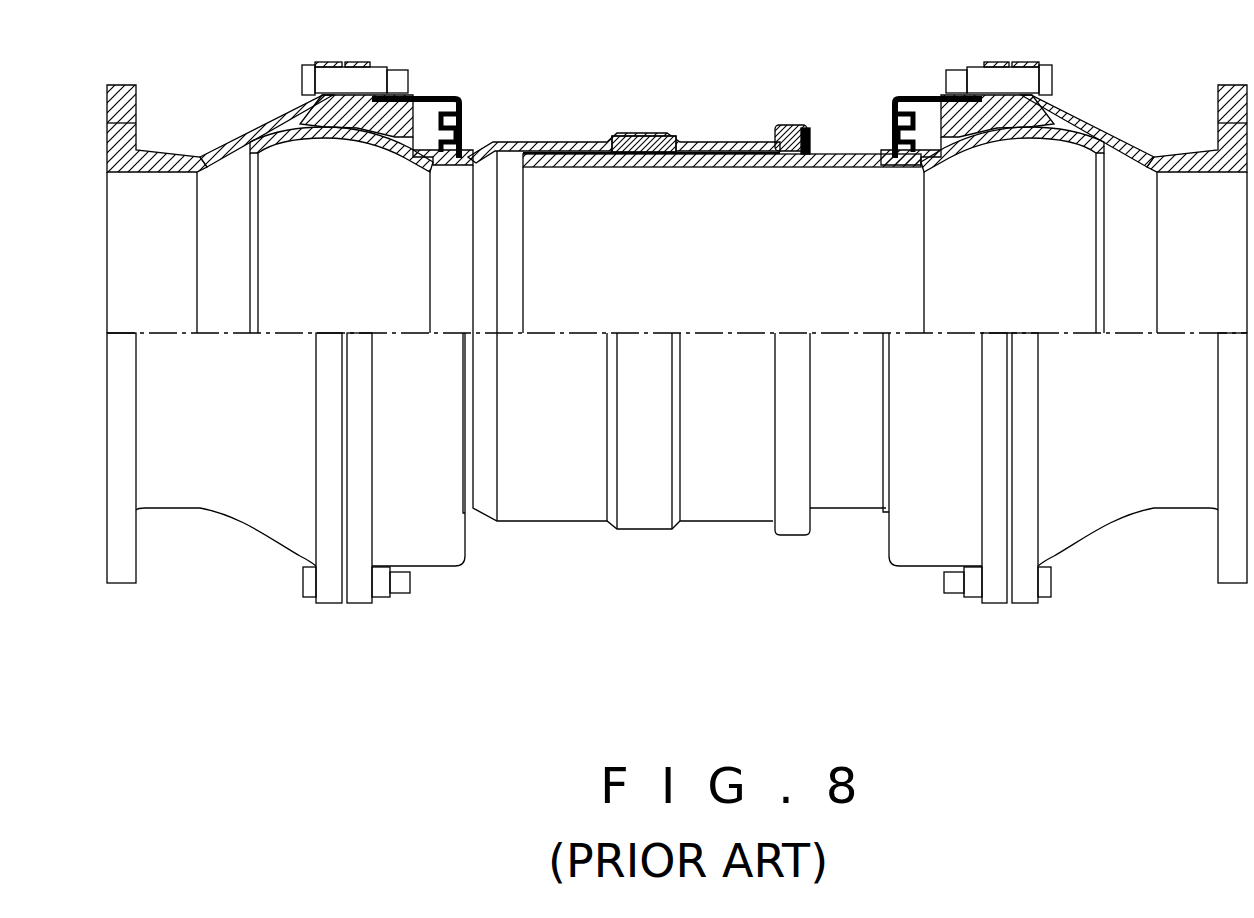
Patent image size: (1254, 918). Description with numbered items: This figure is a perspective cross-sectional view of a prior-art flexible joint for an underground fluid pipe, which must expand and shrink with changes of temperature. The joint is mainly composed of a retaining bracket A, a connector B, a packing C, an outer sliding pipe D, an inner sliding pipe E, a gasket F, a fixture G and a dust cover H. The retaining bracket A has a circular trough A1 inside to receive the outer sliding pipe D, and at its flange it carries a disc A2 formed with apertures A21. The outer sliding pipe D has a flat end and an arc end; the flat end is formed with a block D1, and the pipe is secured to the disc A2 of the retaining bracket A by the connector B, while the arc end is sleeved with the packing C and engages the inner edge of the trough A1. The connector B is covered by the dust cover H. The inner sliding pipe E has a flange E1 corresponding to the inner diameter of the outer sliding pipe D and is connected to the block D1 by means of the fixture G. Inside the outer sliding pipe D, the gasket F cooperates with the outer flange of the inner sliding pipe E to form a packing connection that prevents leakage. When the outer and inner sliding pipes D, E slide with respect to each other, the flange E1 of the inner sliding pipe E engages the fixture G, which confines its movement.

The retaining bracket A is at (267, 127).
The circular trough A1 is at (227, 168).
The disc A2 is at (327, 62).
The apertures A21 is at (313, 62).
The connector B is at (405, 113).
The packing C is at (340, 106).
The outer sliding pipe D is at (570, 143).
The block D1 is at (806, 130).
The inner sliding pipe E is at (867, 153).
The flange E1 is at (700, 150).
The gasket F is at (640, 140).
The fixture G is at (787, 125).
The dust cover H is at (458, 123).